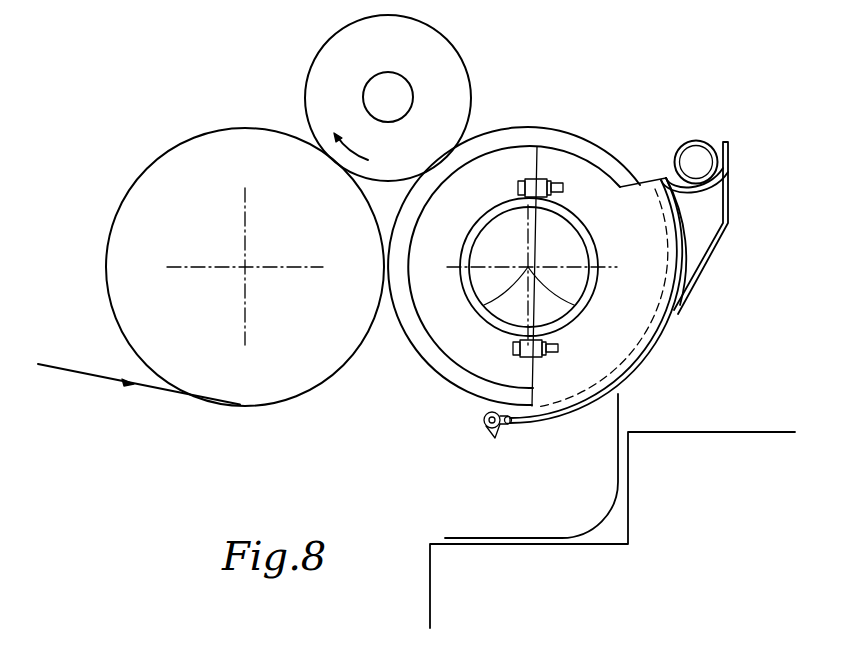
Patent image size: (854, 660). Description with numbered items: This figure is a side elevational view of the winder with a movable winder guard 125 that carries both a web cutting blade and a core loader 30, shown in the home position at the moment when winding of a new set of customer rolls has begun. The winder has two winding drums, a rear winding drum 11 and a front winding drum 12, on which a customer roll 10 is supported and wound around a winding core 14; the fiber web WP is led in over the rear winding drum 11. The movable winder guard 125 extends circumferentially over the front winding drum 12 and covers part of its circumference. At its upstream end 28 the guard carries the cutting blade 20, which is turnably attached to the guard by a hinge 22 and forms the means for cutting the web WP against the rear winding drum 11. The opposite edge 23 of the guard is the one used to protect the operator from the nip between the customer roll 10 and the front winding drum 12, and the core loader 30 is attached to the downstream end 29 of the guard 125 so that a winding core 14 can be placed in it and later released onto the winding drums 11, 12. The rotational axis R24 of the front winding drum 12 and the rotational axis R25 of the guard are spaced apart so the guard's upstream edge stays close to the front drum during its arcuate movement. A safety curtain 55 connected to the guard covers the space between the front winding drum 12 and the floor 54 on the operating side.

The customer roll 10 is at (443, 50).
The rear winding drum 11 is at (168, 158).
The front winding drum 12 is at (578, 142).
The winding core 14 is at (380, 88).
The cutting blade 20 is at (497, 436).
The hinge 22 is at (510, 421).
The edge 23 is at (663, 176).
The upstream end 28 is at (567, 421).
The downstream end 29 is at (683, 267).
The core loader 30 is at (703, 227).
The floor 54 is at (780, 432).
The safety curtain 55 is at (617, 480).
The movable winder guard 125 is at (635, 332).
The rotational axis of the front winding drum R24 is at (488, 306).
The rotational axis of the movable winder guard R25 is at (572, 306).
The fiber web WP is at (107, 380).